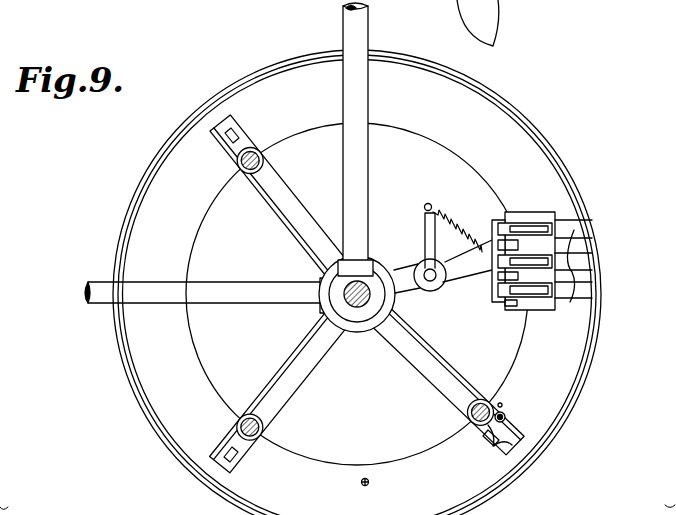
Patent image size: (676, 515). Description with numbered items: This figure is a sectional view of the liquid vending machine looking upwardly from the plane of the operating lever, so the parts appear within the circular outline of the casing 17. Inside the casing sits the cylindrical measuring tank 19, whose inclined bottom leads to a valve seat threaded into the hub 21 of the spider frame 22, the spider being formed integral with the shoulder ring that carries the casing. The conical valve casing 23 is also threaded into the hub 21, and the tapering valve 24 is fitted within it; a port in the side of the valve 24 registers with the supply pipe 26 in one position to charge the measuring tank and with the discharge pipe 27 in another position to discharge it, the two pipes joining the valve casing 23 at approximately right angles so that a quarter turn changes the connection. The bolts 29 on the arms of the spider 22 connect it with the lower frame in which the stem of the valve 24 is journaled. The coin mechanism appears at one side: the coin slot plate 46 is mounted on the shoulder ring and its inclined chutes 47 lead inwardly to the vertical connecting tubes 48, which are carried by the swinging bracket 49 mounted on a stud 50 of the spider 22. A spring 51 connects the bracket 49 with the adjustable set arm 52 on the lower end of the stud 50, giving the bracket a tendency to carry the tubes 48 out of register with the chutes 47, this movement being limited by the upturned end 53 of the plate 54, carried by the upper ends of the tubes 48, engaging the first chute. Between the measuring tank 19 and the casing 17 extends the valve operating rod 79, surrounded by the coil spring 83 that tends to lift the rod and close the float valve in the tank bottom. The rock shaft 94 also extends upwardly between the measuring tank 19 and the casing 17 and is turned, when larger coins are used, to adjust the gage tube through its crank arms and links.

The casing 17 is at (121, 228).
The measuring tank 19 is at (223, 376).
The hub 21 is at (322, 311).
The spider frame 22 is at (283, 222).
The conical valve casing 23 is at (357, 315).
The tapering valve 24 is at (368, 282).
The supply pipe 26 is at (95, 282).
The discharge pipe 27 is at (369, 20).
The bolts 29 is at (237, 161).
The coin slot plate 46 is at (597, 252).
The inclined chutes 47 is at (571, 300).
The vertical connecting tubes 48 is at (538, 223).
The swinging bracket 49 is at (475, 270).
The stud 50 is at (430, 282).
The spring 51 is at (452, 228).
The adjustable set arm 52 is at (425, 240).
The upturned end 53 is at (525, 312).
The plate 54 is at (512, 212).
The valve operating rod 79 is at (507, 417).
The coil spring 83 is at (500, 446).
The rock shaft 94 is at (369, 484).